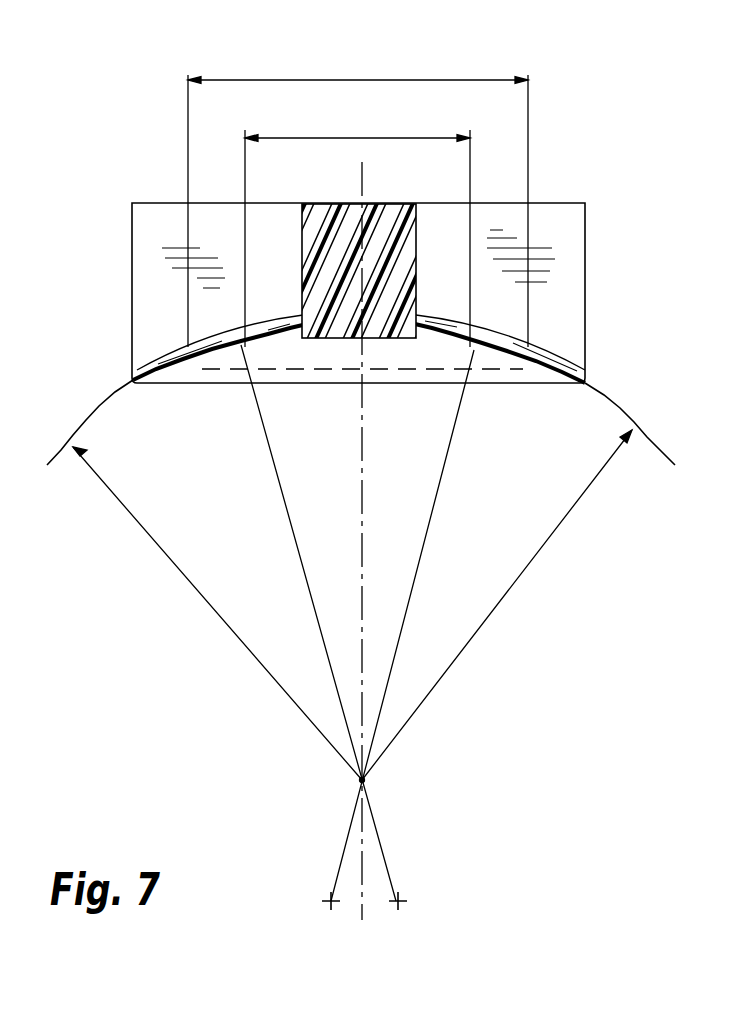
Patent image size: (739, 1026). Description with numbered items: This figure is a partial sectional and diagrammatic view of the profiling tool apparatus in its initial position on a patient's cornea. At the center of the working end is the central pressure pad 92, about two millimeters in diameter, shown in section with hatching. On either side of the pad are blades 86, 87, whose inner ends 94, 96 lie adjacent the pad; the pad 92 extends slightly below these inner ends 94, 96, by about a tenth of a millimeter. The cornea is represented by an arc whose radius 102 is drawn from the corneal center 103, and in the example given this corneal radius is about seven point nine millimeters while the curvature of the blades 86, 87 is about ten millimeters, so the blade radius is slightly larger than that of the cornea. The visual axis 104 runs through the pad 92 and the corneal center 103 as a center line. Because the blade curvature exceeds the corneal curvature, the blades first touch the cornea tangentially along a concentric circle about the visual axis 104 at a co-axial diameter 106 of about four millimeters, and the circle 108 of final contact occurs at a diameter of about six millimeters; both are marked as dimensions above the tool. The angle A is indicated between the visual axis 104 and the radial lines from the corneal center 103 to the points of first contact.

The blade 86 is at (572, 287).
The blade 87 is at (146, 287).
The central pressure pad 92 is at (383, 205).
The inner end of blade 94 is at (585, 333).
The inner end of blade 96 is at (141, 347).
The radius 102 is at (190, 585).
The corneal center 103 is at (364, 780).
The visual axis 104 is at (364, 457).
The co-axial diameter 106 is at (327, 138).
The circle of final contact 108 is at (340, 80).
The angle A is at (232, 362).